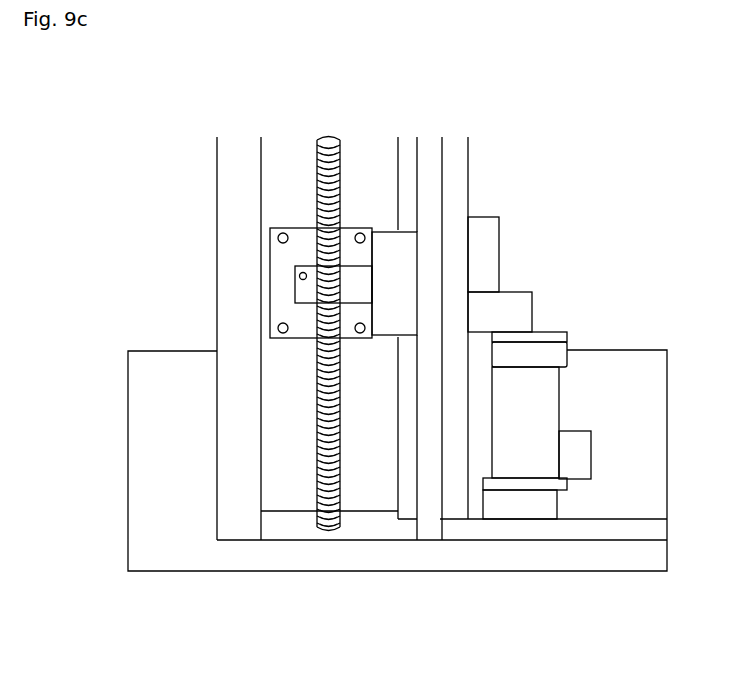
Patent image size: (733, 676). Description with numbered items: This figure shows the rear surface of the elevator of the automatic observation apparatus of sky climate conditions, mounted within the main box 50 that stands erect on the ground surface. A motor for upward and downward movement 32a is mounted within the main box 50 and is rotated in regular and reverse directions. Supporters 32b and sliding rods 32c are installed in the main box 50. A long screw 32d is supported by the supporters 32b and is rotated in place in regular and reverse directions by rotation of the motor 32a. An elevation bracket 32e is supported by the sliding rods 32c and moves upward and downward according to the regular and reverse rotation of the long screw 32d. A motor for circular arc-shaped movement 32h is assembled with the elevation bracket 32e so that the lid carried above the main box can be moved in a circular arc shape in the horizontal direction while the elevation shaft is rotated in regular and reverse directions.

The main box 50 is at (167, 375).
The motor for upward and downward movement 32a is at (533, 407).
The supporters 32b is at (378, 523).
The sliding rods 32c is at (408, 172).
The long screw 32d is at (317, 148).
The elevation bracket 32e is at (282, 260).
The motor for circular arc-shaped movement 32h is at (485, 238).